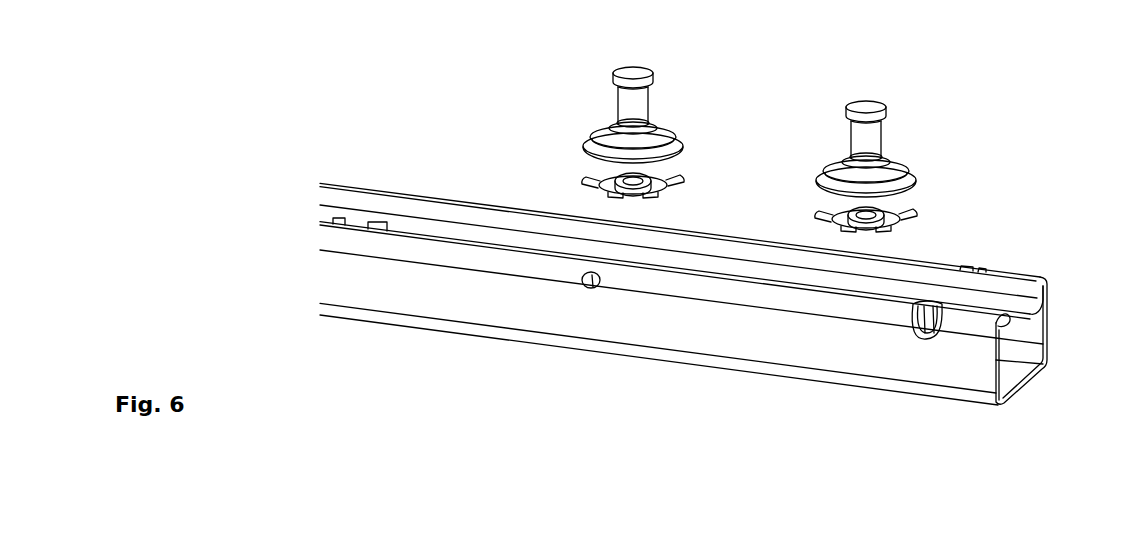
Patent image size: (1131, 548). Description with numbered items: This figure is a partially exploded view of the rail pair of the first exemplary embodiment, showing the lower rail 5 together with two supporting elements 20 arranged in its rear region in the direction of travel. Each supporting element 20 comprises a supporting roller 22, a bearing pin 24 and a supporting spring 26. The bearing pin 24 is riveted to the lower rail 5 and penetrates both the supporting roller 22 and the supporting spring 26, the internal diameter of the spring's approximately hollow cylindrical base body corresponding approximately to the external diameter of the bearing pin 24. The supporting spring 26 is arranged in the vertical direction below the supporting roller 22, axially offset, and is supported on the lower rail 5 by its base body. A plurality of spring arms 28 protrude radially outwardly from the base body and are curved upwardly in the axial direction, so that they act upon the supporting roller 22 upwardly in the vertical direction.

The lower rail 5 is at (375, 282).
The supporting element 20 is at (527, 130).
The supporting roller 22 is at (602, 138).
The bearing pin 24 is at (623, 97).
The supporting spring 26 is at (613, 178).
The spring arm 28 is at (667, 178).